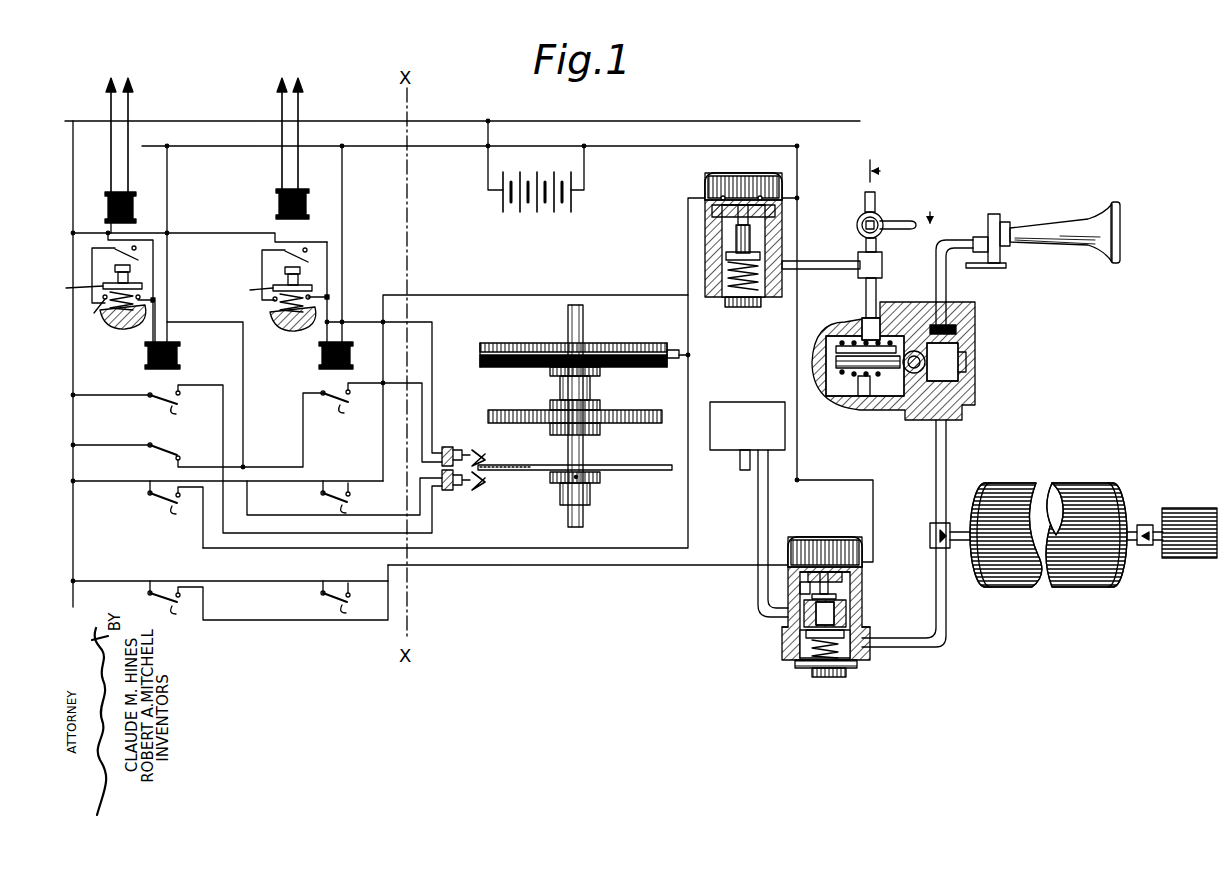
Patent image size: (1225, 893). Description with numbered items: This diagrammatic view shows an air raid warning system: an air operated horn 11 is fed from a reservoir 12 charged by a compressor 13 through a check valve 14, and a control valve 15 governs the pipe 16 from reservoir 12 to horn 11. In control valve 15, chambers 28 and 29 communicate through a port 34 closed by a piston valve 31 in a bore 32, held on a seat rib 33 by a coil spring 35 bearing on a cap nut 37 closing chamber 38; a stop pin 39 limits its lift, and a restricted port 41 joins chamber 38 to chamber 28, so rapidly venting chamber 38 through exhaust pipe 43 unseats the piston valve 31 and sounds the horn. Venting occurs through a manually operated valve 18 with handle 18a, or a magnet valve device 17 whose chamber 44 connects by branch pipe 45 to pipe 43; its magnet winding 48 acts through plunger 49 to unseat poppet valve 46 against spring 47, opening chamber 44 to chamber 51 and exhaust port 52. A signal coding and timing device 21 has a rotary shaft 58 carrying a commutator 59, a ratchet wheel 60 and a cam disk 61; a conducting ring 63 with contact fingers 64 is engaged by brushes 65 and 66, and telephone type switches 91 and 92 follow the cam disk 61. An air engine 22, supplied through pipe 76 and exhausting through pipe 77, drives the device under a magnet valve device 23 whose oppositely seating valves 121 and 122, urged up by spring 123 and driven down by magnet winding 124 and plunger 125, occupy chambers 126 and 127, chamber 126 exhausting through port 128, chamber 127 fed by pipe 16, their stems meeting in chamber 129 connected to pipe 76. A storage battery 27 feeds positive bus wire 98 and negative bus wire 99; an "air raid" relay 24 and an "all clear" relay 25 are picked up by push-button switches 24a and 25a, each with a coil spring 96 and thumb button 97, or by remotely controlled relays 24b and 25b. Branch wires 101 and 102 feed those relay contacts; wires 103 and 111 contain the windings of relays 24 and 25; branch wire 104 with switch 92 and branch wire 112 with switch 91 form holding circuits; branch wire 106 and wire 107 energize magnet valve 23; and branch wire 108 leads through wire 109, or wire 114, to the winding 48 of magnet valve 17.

The air operated horn 11 is at (1070, 222).
The reservoir 12 is at (1000, 482).
The fluid compressor 13 is at (1190, 506).
The check valve 14 is at (1143, 522).
The control valve 15 is at (885, 375).
The pipe 16 is at (960, 292).
The magnet valve device 17 is at (743, 243).
The manually operated valve 18 is at (896, 200).
The operating handle 18a is at (904, 240).
The signal coding and timing device 21 is at (566, 416).
The air engine 22 is at (760, 400).
The magnet valve device 23 is at (815, 427).
The air raid relay 24 is at (145, 356).
The push-button switch 24a is at (145, 282).
The remotely controlled relay 24b is at (104, 212).
The all clear relay 25 is at (319, 356).
The push-button switch 25a is at (315, 282).
The remotely controlled relay 25b is at (276, 205).
The storage battery 27 is at (510, 206).
The chamber 28 is at (918, 424).
The chamber 29 is at (962, 340).
The piston valve 31 is at (872, 330).
The bore 32 is at (884, 320).
The seat rib 33 is at (910, 322).
The port 34 is at (950, 372).
The coil spring 35 is at (862, 398).
The cap nut 37 is at (840, 392).
The chamber 38 is at (872, 400).
The stop pin 39 is at (836, 340).
The restricted port 41 is at (910, 404).
The exhaust pipe 43 is at (866, 296).
The chamber 44 is at (718, 262).
The branch pipe 45 is at (807, 272).
The poppet valve 46 is at (770, 252).
The coil spring 47 is at (740, 296).
The magnet winding 48 is at (705, 190).
The plunger 49 is at (712, 212).
The chamber 51 is at (776, 232).
The exhaust port 52 is at (738, 235).
The rotary shaft 58 is at (583, 383).
The commutator 59 is at (628, 343).
The ratchet wheel 60 is at (505, 412).
The cam disk 61 is at (616, 472).
The continuous conducting ring 63 is at (526, 346).
The contact fingers 64 is at (558, 374).
The brush 65 is at (673, 350).
The brush 66 is at (667, 362).
The pipe 76 is at (757, 528).
The pipe 77 is at (740, 462).
The telephone type switch 91 is at (462, 452).
The telephone type switch 92 is at (460, 486).
The coil spring 96 is at (120, 324).
The thumb button 97 is at (112, 274).
The positive bus wire 98 is at (655, 121).
The negative bus wire 99 is at (718, 146).
The branch wire 101 is at (73, 136).
The branch wire 102 is at (178, 233).
The wire 103 is at (158, 302).
The branch wire 104 is at (138, 392).
The branch wire 106 is at (90, 578).
The wire 107 is at (558, 566).
The branch wire 108 is at (90, 468).
The wire 109 is at (482, 547).
The wire 111 is at (330, 296).
The branch wire 112 is at (88, 434).
The wire 114 is at (492, 295).
The valve 121 is at (850, 608).
The valve 122 is at (782, 636).
The spring 123 is at (830, 678).
The magnet winding 124 is at (835, 545).
The plunger 125 is at (845, 578).
The chamber 126 is at (800, 584).
The chamber 127 is at (790, 650).
The exhaust port 128 is at (848, 588).
The chamber 129 is at (846, 618).